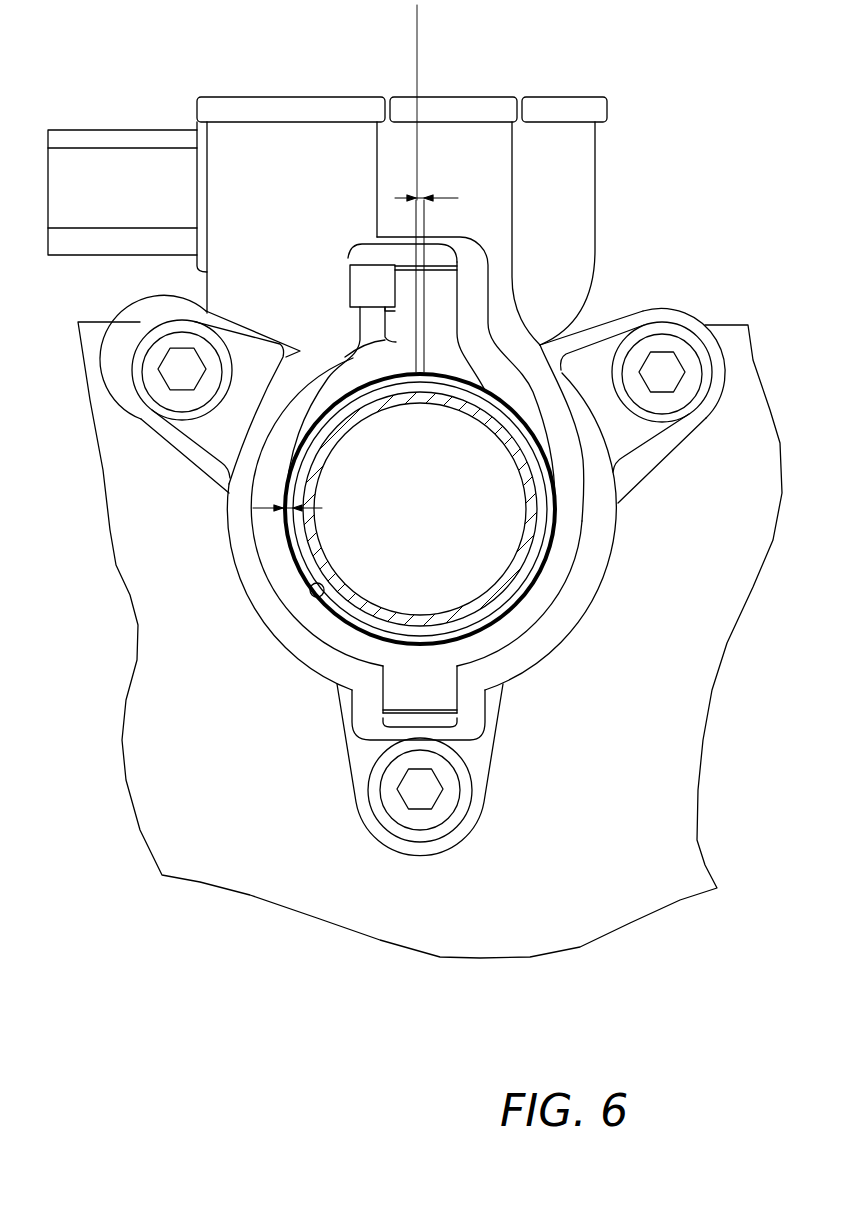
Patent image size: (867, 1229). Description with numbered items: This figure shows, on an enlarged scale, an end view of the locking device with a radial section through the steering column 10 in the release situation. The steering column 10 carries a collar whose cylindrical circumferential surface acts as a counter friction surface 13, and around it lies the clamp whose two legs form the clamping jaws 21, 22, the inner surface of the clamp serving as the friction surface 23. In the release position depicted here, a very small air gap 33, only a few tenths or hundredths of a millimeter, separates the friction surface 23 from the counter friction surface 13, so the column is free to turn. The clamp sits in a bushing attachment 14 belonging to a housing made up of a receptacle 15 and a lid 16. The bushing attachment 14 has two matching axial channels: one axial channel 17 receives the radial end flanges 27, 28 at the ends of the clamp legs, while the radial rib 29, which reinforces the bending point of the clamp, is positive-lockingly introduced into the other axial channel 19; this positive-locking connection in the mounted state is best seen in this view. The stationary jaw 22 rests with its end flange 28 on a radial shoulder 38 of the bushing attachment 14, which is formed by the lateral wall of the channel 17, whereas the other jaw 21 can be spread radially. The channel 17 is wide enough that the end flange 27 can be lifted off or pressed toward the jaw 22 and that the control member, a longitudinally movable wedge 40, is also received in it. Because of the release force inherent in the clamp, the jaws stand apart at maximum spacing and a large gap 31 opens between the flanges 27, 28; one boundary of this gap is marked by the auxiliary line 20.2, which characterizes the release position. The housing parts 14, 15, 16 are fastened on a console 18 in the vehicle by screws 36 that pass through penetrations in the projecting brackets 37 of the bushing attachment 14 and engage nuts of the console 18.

The auxiliary line 20.2 is at (417, 24).
The lid 16 is at (560, 100).
The receptacle 15 is at (578, 187).
The axial channel 17 is at (405, 242).
The large gap 31 is at (420, 192).
The wedge 40 is at (358, 280).
The end flange 27 is at (353, 347).
The end flange 28 is at (470, 303).
The radial shoulder 38 is at (461, 328).
The projecting bracket 37 is at (663, 313).
The screw 36 is at (672, 372).
The steering column 10 is at (427, 408).
The air gap 33 is at (283, 503).
The clamping jaw 21 is at (277, 545).
The friction surface 23 is at (293, 571).
The counter friction surface 13 is at (313, 596).
The clamping jaw 22 is at (566, 546).
The bushing attachment 14 is at (563, 618).
The radial rib 29 is at (413, 680).
The axial channel 19 is at (415, 727).
The console 18 is at (599, 859).